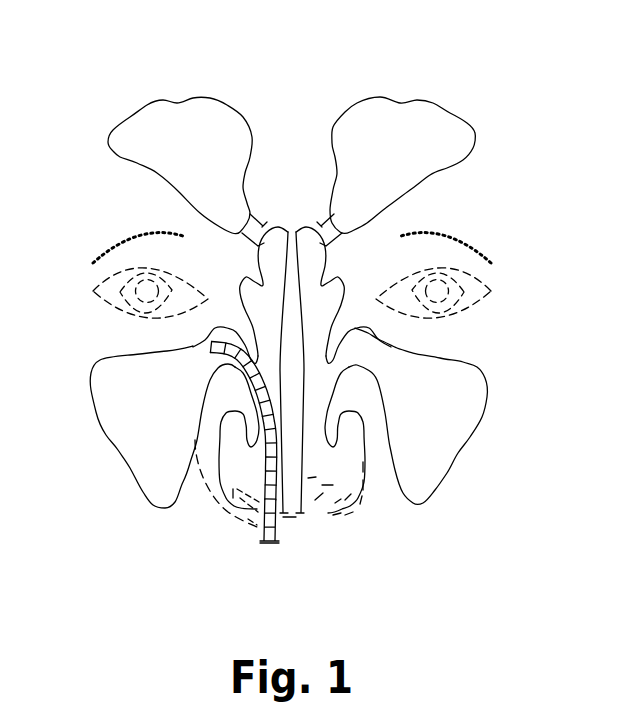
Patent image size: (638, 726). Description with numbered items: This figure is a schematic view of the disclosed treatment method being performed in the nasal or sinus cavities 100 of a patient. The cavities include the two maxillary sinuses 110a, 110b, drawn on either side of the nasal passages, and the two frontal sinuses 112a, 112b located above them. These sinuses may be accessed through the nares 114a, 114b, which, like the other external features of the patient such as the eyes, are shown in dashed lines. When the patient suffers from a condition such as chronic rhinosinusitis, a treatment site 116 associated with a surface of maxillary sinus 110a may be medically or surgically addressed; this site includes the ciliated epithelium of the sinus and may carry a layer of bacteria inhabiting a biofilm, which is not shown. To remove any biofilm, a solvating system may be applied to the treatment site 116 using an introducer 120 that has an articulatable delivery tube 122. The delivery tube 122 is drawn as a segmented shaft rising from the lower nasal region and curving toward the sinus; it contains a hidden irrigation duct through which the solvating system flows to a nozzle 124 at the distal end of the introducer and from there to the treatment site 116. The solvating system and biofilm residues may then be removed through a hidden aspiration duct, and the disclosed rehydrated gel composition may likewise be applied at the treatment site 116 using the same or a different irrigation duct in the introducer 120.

The nasal or sinus cavities 100 is at (481, 83).
The maxillary sinus 110a is at (107, 448).
The maxillary sinus 110b is at (460, 463).
The frontal sinus 112a is at (127, 110).
The frontal sinus 112b is at (482, 118).
The naris 114a is at (248, 533).
The naris 114b is at (331, 526).
The treatment site 116 is at (201, 330).
The introducer 120 is at (300, 461).
The articulatable delivery tube 122 is at (280, 530).
The nozzle 124 is at (207, 349).